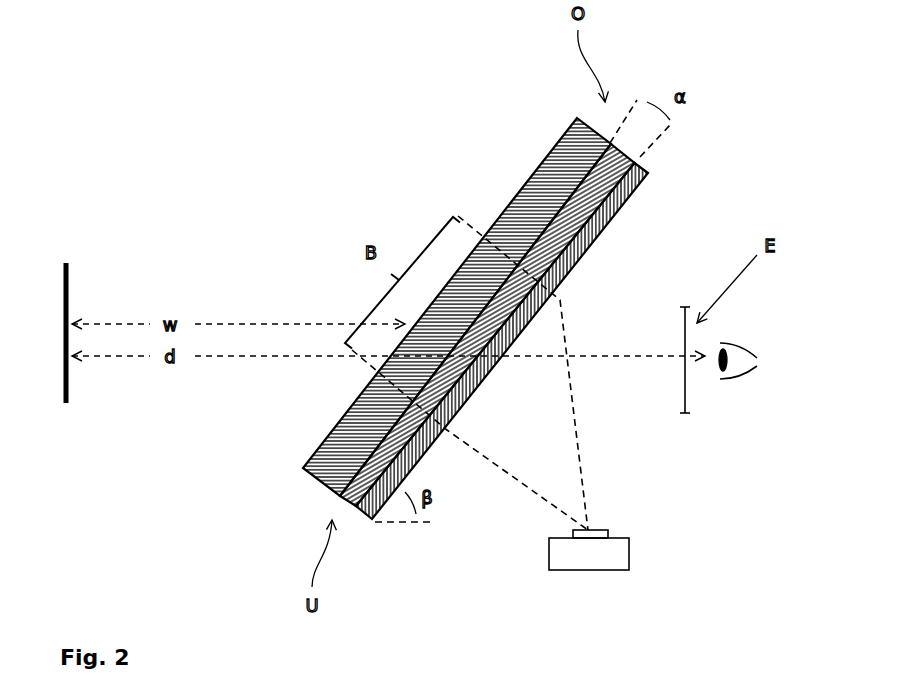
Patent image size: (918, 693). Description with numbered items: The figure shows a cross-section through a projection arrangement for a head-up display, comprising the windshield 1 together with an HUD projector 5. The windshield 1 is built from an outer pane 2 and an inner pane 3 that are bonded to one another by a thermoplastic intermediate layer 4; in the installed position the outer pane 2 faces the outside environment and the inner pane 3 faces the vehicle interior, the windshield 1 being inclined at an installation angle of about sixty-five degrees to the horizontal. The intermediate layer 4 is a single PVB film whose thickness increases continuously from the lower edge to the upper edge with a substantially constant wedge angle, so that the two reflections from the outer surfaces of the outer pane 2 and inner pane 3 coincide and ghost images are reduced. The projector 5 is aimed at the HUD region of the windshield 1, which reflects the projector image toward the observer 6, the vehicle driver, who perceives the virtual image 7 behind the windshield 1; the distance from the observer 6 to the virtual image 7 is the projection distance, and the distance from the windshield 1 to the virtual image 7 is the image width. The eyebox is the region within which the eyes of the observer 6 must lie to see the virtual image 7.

The windshield 1 is at (539, 269).
The outer pane 2 is at (528, 190).
The inner pane 3 is at (644, 186).
The thermoplastic intermediate layer 4 is at (613, 182).
The HUD projector 5 is at (610, 557).
The observer 6 is at (752, 342).
The virtual image 7 is at (67, 275).